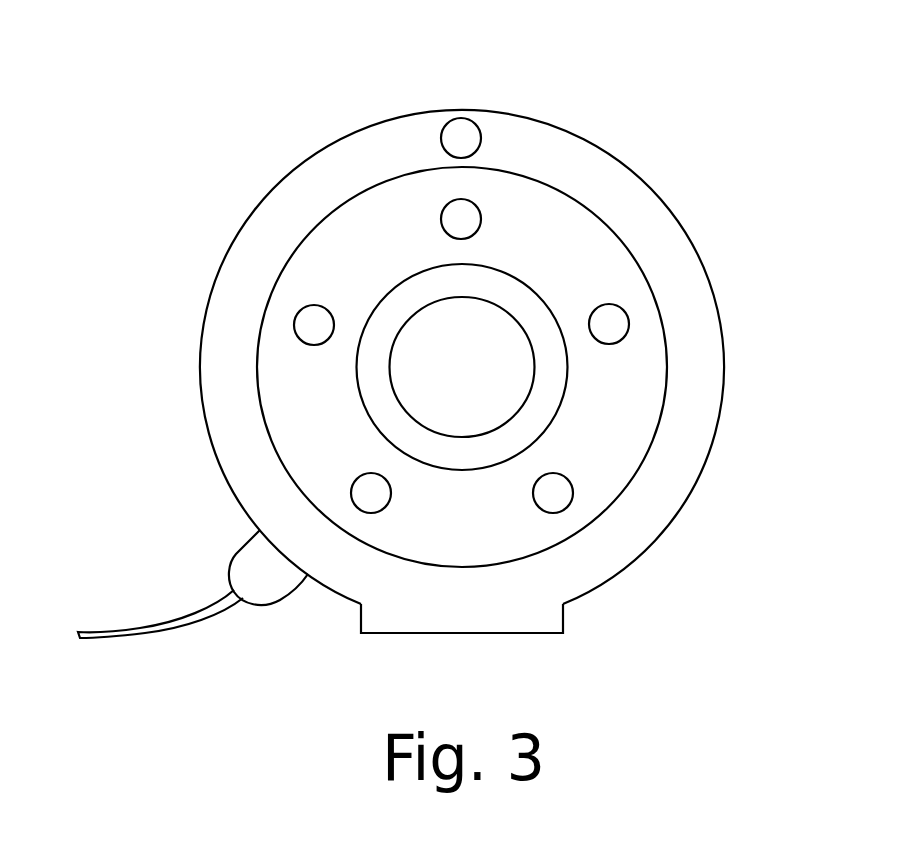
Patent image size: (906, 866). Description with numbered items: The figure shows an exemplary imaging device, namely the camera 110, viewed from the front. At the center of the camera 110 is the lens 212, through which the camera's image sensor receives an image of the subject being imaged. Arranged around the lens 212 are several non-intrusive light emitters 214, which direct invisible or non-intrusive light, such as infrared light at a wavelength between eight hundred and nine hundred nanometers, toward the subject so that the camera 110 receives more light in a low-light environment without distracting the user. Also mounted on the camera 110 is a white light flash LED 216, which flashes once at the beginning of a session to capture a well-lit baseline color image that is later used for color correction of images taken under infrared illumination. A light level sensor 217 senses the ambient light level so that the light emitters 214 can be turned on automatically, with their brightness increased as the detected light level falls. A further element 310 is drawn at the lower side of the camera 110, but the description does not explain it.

The camera 110 is at (637, 73).
The lens 212 is at (533, 378).
The non-intrusive light emitters 214 is at (315, 305).
The white light flash LED 216 is at (442, 214).
The light level sensor 217 is at (465, 121).
The cable connector 310 is at (236, 554).